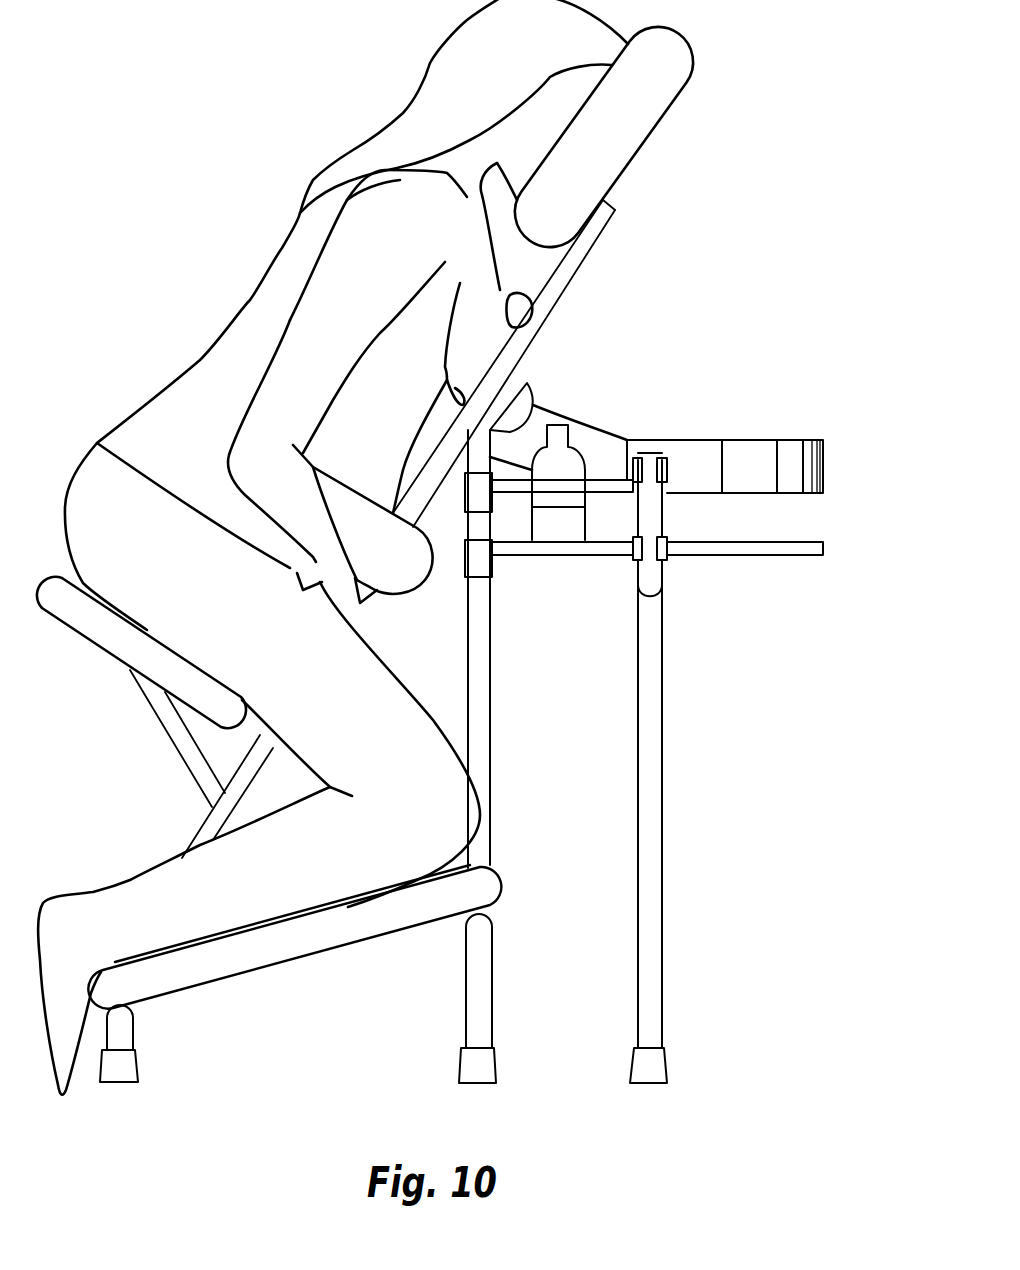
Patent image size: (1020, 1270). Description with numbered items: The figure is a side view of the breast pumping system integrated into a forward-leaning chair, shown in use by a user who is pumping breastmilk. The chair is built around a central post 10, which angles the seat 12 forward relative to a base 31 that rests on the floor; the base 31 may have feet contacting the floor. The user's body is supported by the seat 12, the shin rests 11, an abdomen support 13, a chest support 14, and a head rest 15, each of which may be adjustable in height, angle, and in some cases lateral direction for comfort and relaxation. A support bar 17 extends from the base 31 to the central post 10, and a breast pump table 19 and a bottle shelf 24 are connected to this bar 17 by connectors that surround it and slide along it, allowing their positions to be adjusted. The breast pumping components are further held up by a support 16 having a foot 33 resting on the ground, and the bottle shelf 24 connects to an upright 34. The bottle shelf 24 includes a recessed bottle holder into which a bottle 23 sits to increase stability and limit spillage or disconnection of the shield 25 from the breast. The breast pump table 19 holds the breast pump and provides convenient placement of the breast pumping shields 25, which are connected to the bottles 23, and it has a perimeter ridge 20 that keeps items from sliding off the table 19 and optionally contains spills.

The central post 10 is at (597, 247).
The shin rests 11 is at (292, 943).
The seat 12 is at (103, 633).
The abdomen support 13 is at (405, 575).
The chest support 14 is at (518, 308).
The head rest 15 is at (635, 125).
The support 16 is at (662, 826).
The support bar 17 is at (492, 750).
The breast pump table 19 is at (787, 420).
The perimeter ridge 20 is at (826, 463).
The bottle 23 is at (547, 527).
The bottle shelf 24 is at (770, 557).
The breast pumping shield 25 is at (543, 405).
The base 31 is at (137, 1061).
The foot 33 is at (668, 1065).
The upright 34 is at (665, 518).